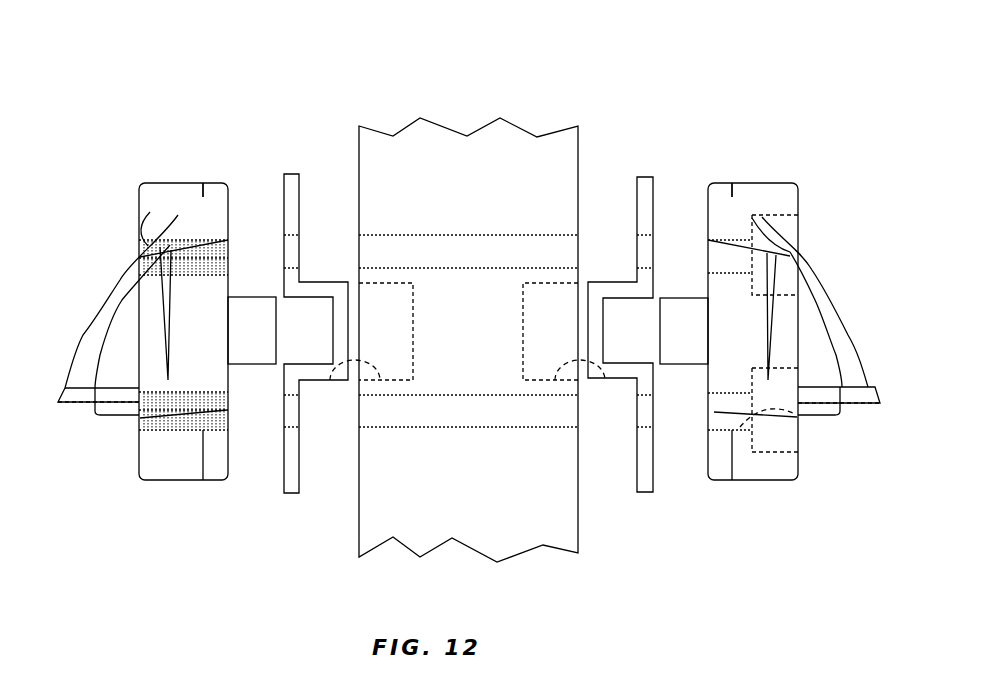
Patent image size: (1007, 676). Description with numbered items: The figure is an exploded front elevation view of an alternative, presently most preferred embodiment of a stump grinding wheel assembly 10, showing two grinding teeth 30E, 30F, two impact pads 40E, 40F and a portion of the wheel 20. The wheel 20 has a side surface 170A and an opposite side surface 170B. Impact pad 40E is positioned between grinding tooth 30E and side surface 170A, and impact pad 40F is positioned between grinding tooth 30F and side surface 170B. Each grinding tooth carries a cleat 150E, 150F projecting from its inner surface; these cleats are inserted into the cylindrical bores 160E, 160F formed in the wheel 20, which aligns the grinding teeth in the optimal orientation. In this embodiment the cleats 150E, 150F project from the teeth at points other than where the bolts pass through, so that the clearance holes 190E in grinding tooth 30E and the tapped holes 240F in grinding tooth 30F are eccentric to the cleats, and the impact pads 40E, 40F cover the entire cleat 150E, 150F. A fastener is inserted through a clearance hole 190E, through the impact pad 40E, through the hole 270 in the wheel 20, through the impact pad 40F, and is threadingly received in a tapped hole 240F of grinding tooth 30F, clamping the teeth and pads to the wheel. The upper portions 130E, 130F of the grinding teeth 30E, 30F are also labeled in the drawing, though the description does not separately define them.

The stump grinding wheel assembly 10 is at (128, 141).
The wheel 20 is at (443, 153).
The grinding tooth 30F is at (157, 195).
The grinding tooth 30E is at (780, 195).
The impact pad 40F is at (292, 174).
The impact pad 40E is at (645, 177).
The housing top wall 130F is at (228, 195).
The housing top wall 130E is at (708, 194).
The cleat 150F is at (247, 366).
The cleat 150E is at (688, 366).
The cylindrical bore 160F is at (350, 380).
The cylindrical bore 160E is at (590, 380).
The side surface 170A is at (585, 132).
The side surface 170B is at (353, 132).
The clearance hole 190E is at (802, 254).
The tapped hole 240F is at (142, 258).
The hole 270 is at (453, 240).